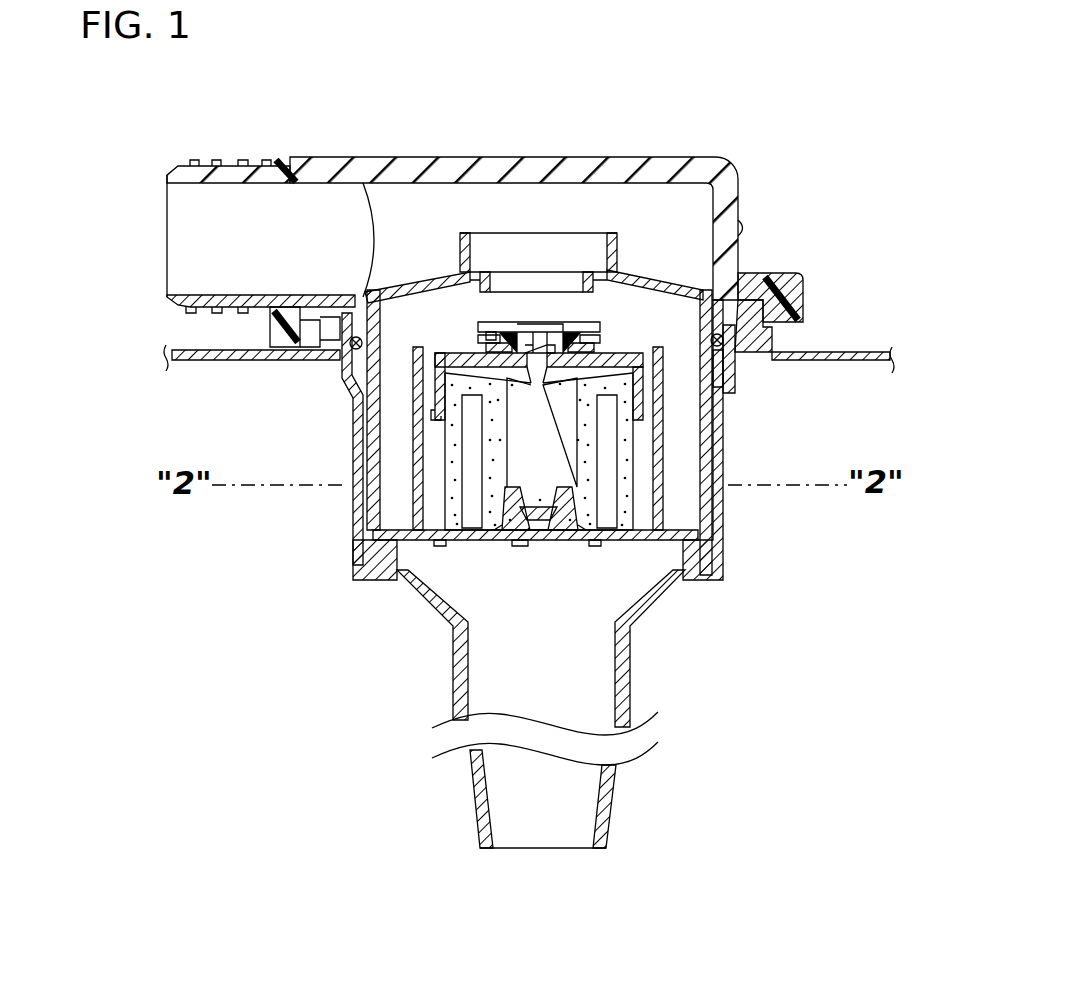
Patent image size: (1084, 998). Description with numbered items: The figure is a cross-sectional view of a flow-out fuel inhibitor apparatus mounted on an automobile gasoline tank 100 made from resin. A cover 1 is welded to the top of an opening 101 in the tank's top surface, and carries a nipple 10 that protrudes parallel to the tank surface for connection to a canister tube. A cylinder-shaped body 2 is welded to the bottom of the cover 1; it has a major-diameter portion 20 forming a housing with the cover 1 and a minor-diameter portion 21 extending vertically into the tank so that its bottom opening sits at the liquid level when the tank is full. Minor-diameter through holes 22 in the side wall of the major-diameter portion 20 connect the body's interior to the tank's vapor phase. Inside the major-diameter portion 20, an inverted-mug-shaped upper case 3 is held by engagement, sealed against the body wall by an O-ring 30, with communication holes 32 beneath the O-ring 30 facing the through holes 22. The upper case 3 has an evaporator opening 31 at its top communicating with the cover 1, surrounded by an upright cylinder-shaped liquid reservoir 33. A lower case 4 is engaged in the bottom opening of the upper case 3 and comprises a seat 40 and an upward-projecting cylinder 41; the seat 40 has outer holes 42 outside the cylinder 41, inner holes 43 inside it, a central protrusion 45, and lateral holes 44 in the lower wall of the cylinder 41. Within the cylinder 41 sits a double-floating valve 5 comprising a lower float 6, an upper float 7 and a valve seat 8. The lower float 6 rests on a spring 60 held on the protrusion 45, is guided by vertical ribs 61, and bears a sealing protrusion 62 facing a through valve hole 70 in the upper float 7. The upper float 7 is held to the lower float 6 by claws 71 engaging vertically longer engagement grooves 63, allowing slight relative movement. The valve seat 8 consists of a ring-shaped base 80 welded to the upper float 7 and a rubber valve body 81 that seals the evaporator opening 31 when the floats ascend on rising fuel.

The cover 1 is at (662, 160).
The nipple 10 is at (220, 164).
The cylinder-shaped liquid reservoir 33 is at (462, 246).
The evaporator opening 31 is at (578, 282).
The upper case 3 is at (650, 268).
The O-ring 30 is at (723, 332).
The gasoline tank 100 is at (828, 350).
The cylinder 41 is at (417, 346).
The ring-shaped base 80 is at (482, 338).
The valve body 81 is at (491, 324).
The valve seat 8 is at (582, 340).
The through valve hole 70 is at (543, 350).
The upper float 7 is at (605, 358).
The sealing protrusion 62 is at (538, 366).
The ribs 61 is at (645, 398).
The claws 71 is at (440, 416).
The double-floating valve 5 is at (627, 462).
The lower float 6 is at (577, 427).
The spring 60 is at (505, 508).
The seat 40 is at (640, 542).
The inner holes 43 is at (440, 542).
The protrusion 45 is at (520, 542).
The engagement grooves 63 is at (363, 447).
The lateral holes 44 is at (363, 503).
The lower case 4 is at (338, 427).
The outer holes 42 is at (400, 572).
The opening 101 is at (327, 360).
The minor-diameter through holes 22 is at (735, 363).
The communication holes 32 is at (735, 383).
The major-diameter portion 20 is at (726, 522).
The cylinder-shaped body 2 is at (656, 601).
The minor-diameter portion 21 is at (606, 780).